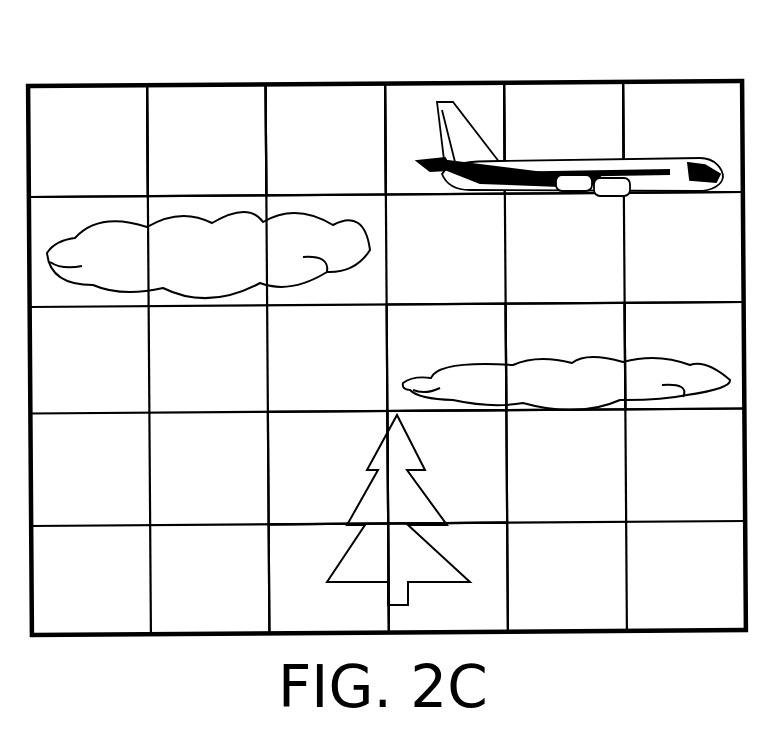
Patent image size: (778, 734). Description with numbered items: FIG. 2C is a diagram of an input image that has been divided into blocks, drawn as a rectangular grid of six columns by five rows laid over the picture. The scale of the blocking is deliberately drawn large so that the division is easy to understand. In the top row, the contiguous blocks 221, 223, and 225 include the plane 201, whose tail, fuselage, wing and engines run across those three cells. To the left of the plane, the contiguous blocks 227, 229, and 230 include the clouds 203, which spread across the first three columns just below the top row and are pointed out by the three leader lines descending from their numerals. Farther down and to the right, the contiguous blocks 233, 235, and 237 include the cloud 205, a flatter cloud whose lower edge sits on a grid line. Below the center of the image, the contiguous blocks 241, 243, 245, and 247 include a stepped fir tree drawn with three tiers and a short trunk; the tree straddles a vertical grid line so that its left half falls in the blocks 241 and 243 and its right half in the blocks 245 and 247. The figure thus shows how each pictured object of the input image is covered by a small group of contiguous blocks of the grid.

The plane 201 is at (570, 174).
The clouds 203 is at (208, 255).
The cloud 205 is at (566, 383).
The contiguous block 221 is at (445, 115).
The contiguous block 223 is at (564, 115).
The contiguous block 225 is at (683, 113).
The contiguous block 227 is at (78, 183).
The contiguous block 229 is at (190, 183).
The contiguous block 230 is at (320, 182).
The contiguous block 233 is at (447, 357).
The contiguous block 235 is at (566, 356).
The contiguous block 237 is at (685, 355).
The contiguous block 241 is at (328, 467).
The contiguous block 243 is at (329, 578).
The contiguous block 245 is at (447, 466).
The contiguous block 247 is at (448, 578).